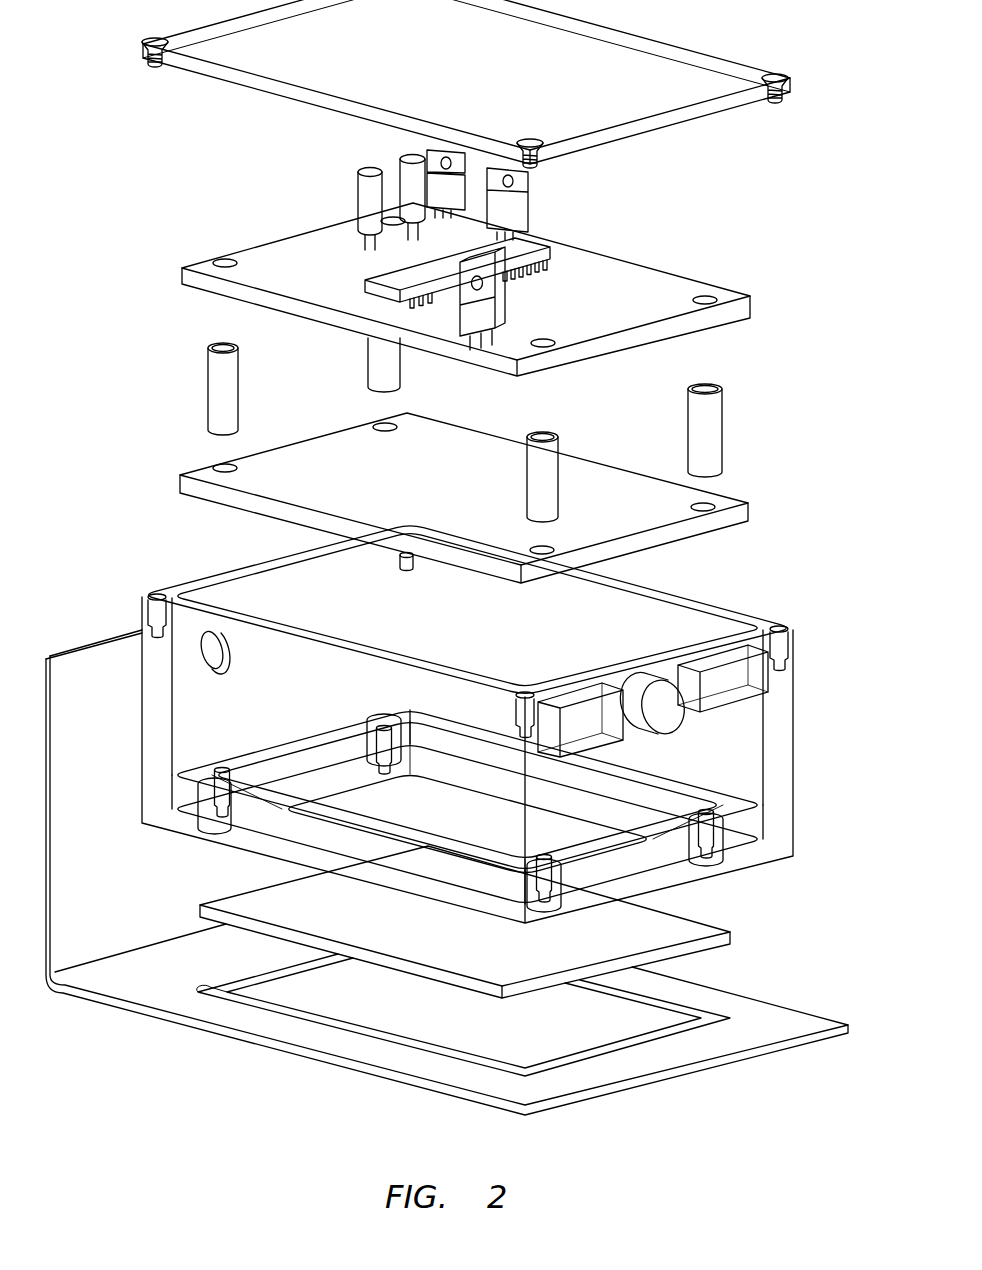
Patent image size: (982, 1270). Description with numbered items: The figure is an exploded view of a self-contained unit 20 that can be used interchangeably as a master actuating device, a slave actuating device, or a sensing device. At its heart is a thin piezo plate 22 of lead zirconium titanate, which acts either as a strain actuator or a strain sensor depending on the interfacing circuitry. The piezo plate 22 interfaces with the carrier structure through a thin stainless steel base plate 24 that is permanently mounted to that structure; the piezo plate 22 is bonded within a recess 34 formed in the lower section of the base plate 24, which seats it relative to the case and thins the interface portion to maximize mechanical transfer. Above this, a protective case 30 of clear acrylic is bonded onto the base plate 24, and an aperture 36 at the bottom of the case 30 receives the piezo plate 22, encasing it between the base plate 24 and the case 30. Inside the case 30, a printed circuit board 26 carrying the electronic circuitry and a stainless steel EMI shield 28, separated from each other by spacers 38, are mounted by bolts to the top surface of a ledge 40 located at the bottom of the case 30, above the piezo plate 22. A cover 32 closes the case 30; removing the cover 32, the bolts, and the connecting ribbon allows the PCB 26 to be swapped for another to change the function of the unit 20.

The self-contained unit 20 is at (116, 396).
The piezo plate 22 is at (735, 927).
The base plate 24 is at (447, 878).
The printed circuit board 26 is at (752, 300).
The EMI shield 28 is at (750, 515).
The protective case 30 is at (795, 720).
The cover 32 is at (793, 78).
The recess 34 is at (603, 1027).
The aperture 36 is at (507, 811).
The spacers 38 is at (723, 430).
The ledge 40 is at (613, 842).